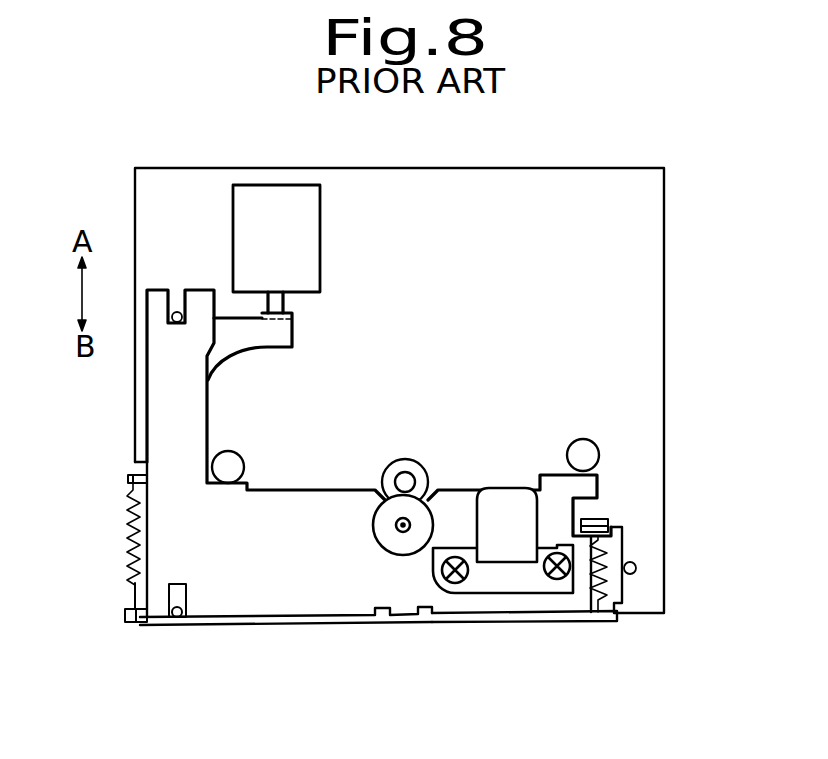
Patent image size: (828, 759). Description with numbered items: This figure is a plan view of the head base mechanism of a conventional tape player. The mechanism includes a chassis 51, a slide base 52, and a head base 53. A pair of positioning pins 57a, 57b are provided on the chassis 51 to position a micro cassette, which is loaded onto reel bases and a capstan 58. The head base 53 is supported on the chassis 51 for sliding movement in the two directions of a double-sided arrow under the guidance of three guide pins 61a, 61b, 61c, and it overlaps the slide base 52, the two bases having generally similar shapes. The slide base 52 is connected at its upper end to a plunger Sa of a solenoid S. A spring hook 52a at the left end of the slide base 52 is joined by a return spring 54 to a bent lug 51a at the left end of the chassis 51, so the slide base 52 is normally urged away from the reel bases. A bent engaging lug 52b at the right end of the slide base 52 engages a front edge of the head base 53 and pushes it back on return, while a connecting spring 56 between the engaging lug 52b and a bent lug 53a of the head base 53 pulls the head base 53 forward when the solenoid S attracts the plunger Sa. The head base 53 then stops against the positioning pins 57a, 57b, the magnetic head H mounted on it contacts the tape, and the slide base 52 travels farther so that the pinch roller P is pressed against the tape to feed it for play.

The chassis 51 is at (640, 292).
The bent lug 51a is at (130, 622).
The slide base 52 is at (258, 334).
The spring hook 52a is at (128, 480).
The bent engaging lug 52b is at (612, 520).
The head base 53 is at (300, 618).
The bent lug 53a is at (545, 620).
The return spring 54 is at (128, 540).
The connecting spring 56 is at (620, 600).
The positioning pin 57a is at (585, 455).
The positioning pin 57b is at (228, 467).
The capstan 58 is at (405, 480).
The guide pin 61a is at (175, 312).
The guide pin 61b is at (177, 618).
The guide pin 61c is at (637, 568).
The solenoid S is at (288, 253).
The plunger Sa is at (282, 305).
The pinch roller P is at (385, 525).
The magnetic head H is at (497, 500).